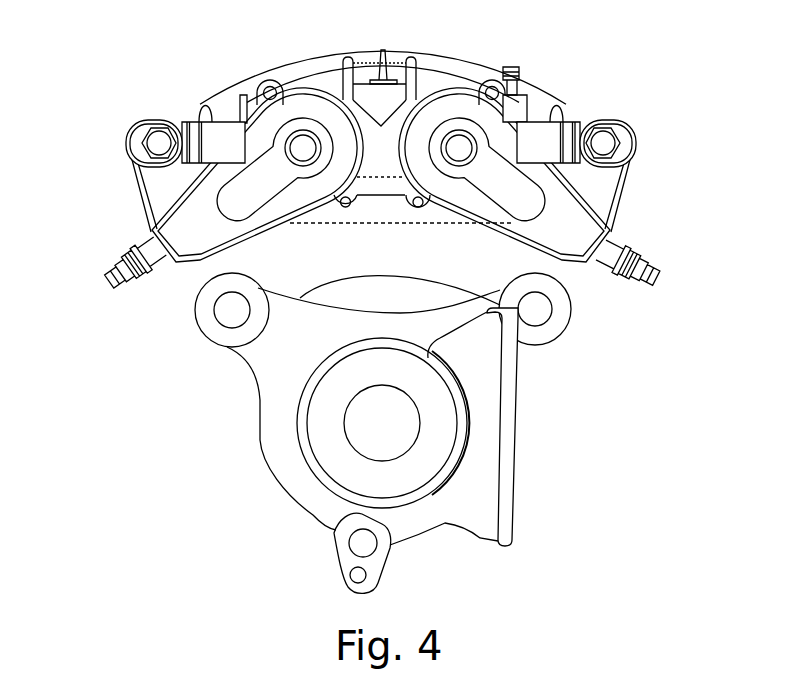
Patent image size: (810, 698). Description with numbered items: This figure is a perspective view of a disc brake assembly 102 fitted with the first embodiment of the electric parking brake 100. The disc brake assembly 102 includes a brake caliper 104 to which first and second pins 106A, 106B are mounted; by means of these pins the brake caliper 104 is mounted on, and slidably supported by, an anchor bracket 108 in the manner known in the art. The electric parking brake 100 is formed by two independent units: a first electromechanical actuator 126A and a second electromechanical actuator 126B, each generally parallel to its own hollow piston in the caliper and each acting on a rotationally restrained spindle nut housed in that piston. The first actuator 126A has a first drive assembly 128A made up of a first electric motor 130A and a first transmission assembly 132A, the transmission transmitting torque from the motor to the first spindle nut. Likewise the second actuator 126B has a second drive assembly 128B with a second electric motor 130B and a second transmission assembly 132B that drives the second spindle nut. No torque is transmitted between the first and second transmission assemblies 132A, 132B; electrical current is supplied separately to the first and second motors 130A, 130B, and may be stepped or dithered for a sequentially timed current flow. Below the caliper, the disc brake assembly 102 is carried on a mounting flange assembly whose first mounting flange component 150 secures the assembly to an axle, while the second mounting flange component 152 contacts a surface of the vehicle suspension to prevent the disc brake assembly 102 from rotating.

The electric parking brake 100 is at (203, 400).
The disc brake assembly 102 is at (533, 35).
The brake caliper 104 is at (430, 68).
The first pin 106A is at (160, 140).
The second pin 106B is at (604, 140).
The anchor bracket 108 is at (628, 186).
The first electromechanical actuator 126A is at (211, 134).
The second electromechanical actuator 126B is at (546, 130).
The first drive assembly 128A is at (243, 201).
The second drive assembly 128B is at (499, 188).
The first electric motor 130A is at (200, 221).
The second electric motor 130B is at (567, 233).
The first transmission assembly 132A is at (303, 148).
The second transmission assembly 132B is at (458, 147).
The first mounting flange component 150 is at (280, 446).
The second mounting flange component 152 is at (473, 507).